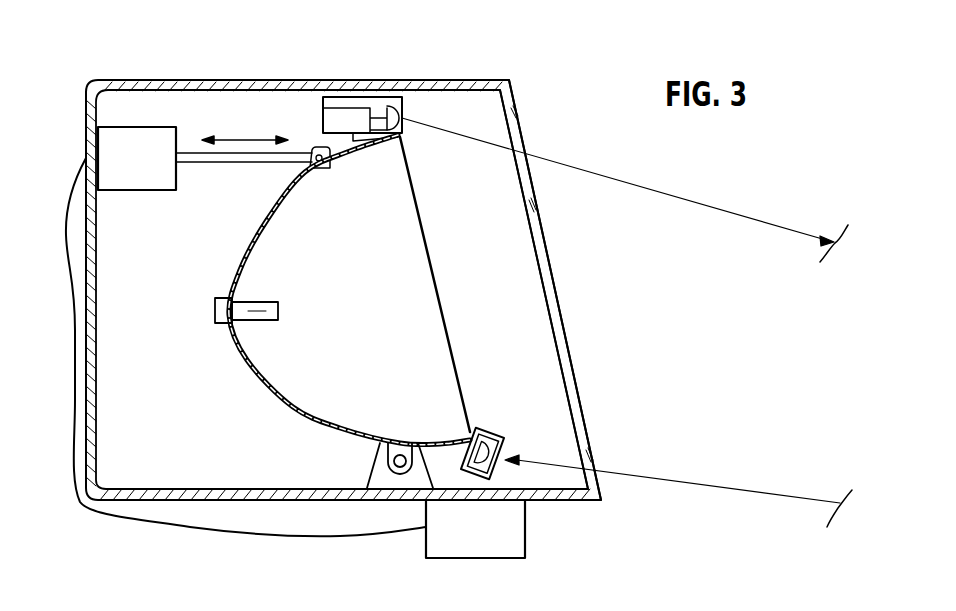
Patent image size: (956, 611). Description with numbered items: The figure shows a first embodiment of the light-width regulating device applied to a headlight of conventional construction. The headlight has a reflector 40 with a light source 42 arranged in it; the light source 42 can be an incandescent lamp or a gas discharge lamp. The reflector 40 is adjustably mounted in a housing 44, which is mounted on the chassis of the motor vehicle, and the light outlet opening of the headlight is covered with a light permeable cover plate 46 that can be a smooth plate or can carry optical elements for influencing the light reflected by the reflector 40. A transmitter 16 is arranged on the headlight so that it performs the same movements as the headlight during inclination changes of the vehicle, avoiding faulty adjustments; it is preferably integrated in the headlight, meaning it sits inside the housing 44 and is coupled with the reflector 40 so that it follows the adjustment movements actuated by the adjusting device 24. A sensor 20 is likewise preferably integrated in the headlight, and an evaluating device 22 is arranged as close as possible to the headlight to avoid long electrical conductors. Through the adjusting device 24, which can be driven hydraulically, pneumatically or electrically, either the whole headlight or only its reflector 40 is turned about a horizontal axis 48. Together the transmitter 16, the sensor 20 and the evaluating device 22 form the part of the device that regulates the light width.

The transmitter 16 is at (358, 102).
The sensor 20 is at (485, 428).
The evaluating device 22 is at (517, 522).
The adjusting device 24 is at (137, 178).
The reflector 40 is at (283, 400).
The light source 42 is at (269, 300).
The housing 44 is at (183, 84).
The cover plate 46 is at (545, 253).
The horizontal axis 48 is at (410, 397).